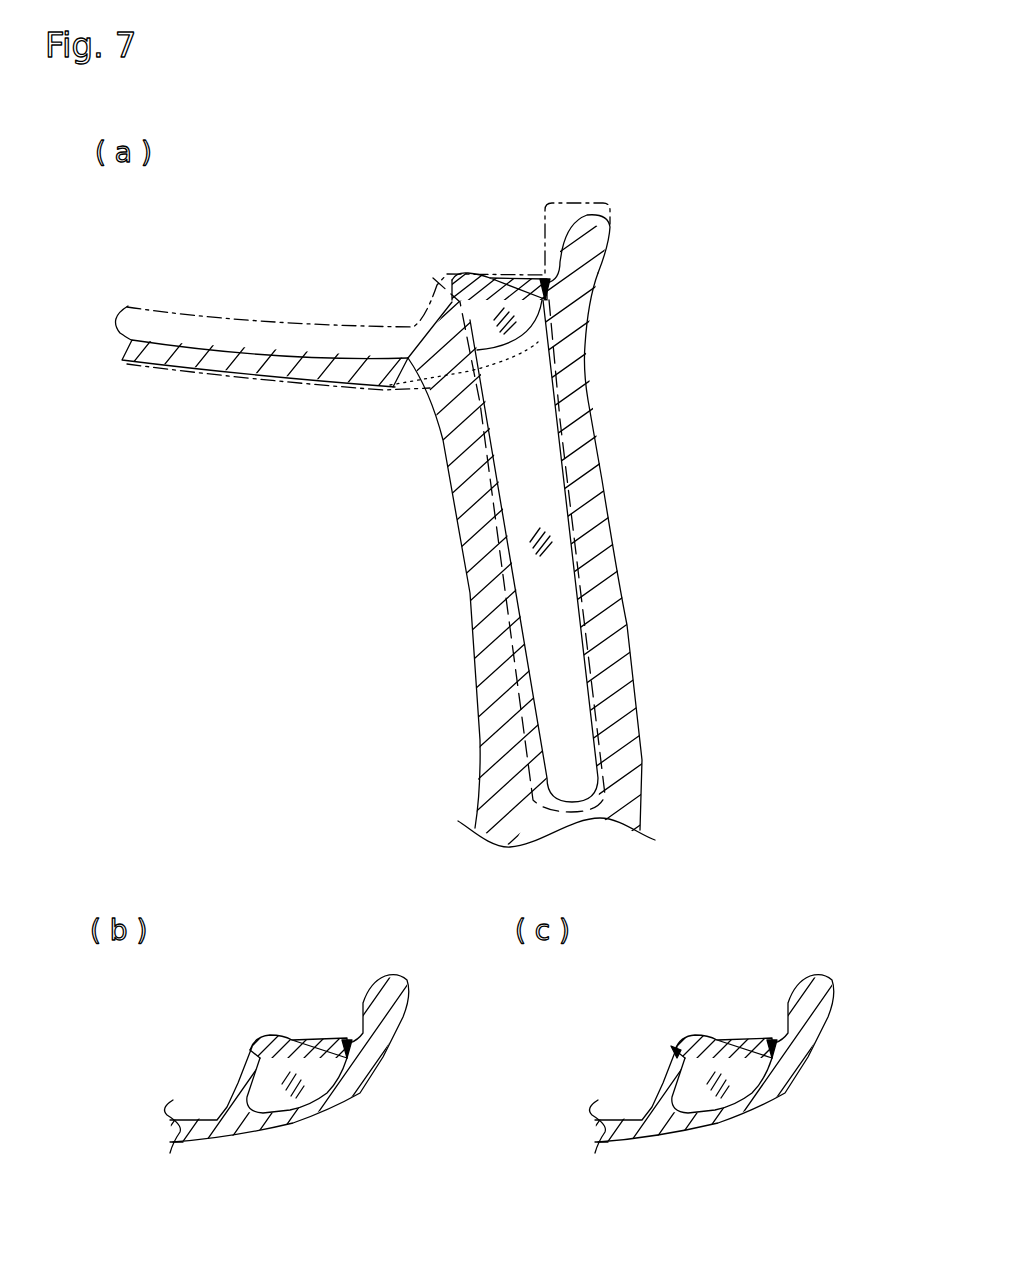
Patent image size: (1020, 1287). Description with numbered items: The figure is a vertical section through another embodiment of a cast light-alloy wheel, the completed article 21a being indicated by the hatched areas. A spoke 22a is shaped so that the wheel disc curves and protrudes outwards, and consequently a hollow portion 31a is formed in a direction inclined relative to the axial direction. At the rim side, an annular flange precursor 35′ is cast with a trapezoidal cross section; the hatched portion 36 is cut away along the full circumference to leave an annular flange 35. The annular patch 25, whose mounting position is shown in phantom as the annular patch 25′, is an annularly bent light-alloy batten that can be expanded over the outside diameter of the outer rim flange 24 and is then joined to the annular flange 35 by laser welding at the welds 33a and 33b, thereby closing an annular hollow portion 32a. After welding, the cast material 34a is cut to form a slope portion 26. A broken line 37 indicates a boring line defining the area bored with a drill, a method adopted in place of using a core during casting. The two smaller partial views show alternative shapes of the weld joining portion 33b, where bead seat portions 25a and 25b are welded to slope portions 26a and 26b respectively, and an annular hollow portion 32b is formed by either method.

The frame member 21a is at (686, 460).
The spoke 22a is at (632, 632).
The outer rim flange 24 is at (580, 248).
The cover plate 25 is at (497, 287).
The annular patch 25′ is at (518, 273).
The bead seat portion 25a is at (290, 1038).
The bead seat portion 25b is at (721, 1018).
The slope portion 26 is at (437, 347).
The slope portion 26a is at (240, 1083).
The slope portion 26b is at (626, 1083).
The hollow portion 31a is at (545, 545).
The annular hollow portion 32a is at (513, 327).
The cavity 32b is at (297, 1090).
The weld 33a is at (550, 288).
The weld joining portion 33b is at (437, 297).
The cast material 34a is at (230, 335).
The annular flange 35 is at (428, 290).
The annular flange precursor 35′ is at (425, 323).
The hatched portion 36 is at (463, 380).
The broken line 37 is at (607, 731).